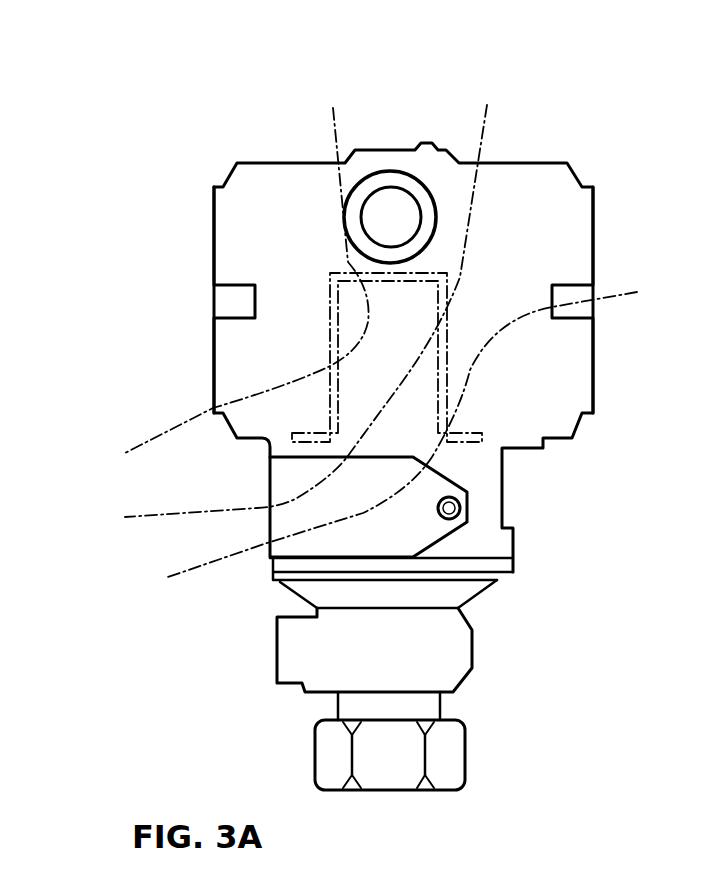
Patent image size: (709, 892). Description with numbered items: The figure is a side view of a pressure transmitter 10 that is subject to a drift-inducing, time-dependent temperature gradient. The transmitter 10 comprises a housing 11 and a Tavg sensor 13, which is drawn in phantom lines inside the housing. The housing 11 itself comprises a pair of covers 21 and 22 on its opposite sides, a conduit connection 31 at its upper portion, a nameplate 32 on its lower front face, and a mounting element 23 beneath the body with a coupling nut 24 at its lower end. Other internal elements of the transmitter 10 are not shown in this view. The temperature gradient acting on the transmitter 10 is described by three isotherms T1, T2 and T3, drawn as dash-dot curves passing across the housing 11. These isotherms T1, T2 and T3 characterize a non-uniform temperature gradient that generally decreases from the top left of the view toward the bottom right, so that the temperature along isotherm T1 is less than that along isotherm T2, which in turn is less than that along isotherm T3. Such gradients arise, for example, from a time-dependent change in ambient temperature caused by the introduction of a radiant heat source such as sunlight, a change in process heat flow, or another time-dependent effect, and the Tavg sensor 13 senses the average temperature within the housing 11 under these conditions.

The transmitter 10 is at (158, 105).
The housing 11 is at (309, 162).
The Tavg sensor 13 is at (328, 357).
The cover 21 is at (187, 237).
The cover 22 is at (617, 237).
The mounting element 23 is at (293, 658).
The coupling nut 24 is at (335, 755).
The conduit connection 31 is at (377, 171).
The nameplate 32 is at (290, 488).
The isotherm T1 is at (389, 449).
The isotherm T2 is at (289, 323).
The isotherm T3 is at (230, 296).